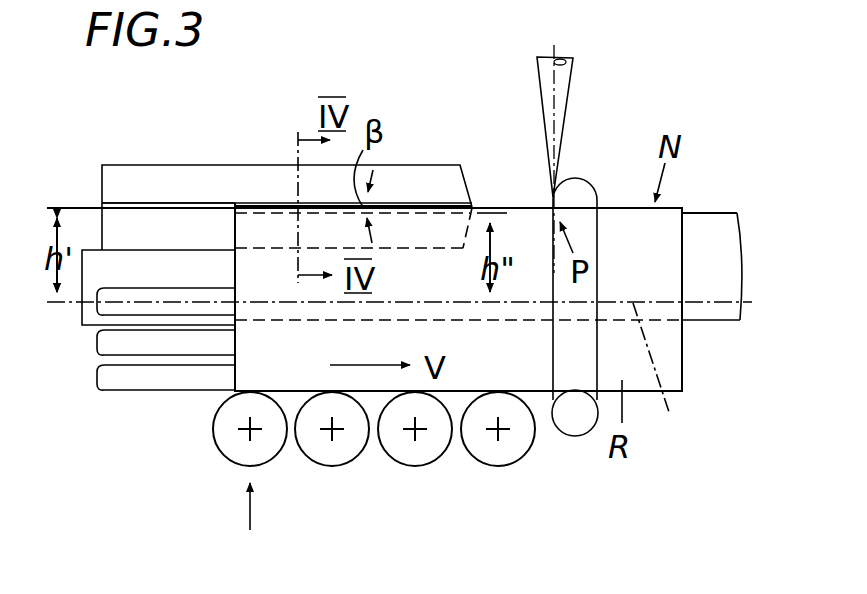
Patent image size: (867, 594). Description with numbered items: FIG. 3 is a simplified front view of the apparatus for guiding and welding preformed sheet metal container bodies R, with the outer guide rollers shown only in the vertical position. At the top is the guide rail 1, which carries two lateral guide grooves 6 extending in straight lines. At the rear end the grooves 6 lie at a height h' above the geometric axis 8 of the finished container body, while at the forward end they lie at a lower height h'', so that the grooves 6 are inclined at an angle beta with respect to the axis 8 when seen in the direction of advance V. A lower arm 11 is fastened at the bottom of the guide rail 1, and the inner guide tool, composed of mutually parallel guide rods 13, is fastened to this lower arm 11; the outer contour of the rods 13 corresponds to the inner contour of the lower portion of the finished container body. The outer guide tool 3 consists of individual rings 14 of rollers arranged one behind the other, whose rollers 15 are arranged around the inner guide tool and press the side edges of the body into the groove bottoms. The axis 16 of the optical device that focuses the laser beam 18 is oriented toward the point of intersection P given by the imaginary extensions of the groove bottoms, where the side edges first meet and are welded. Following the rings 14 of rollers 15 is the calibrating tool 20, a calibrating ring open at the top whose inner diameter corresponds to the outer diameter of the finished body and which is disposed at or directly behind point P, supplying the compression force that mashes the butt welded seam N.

The guide rail 1 is at (262, 178).
The outer guide tool 3 is at (200, 428).
The guide grooves 6 is at (210, 203).
The geometric axis 8 is at (663, 381).
The lower arm 11 is at (182, 260).
The guide rods 13 is at (140, 297).
The rings of rollers 14 is at (256, 530).
The rollers 15 is at (508, 463).
The axis of optical device 16 is at (555, 125).
The laser beam 18 is at (565, 77).
The calibrating tool 20 is at (583, 197).